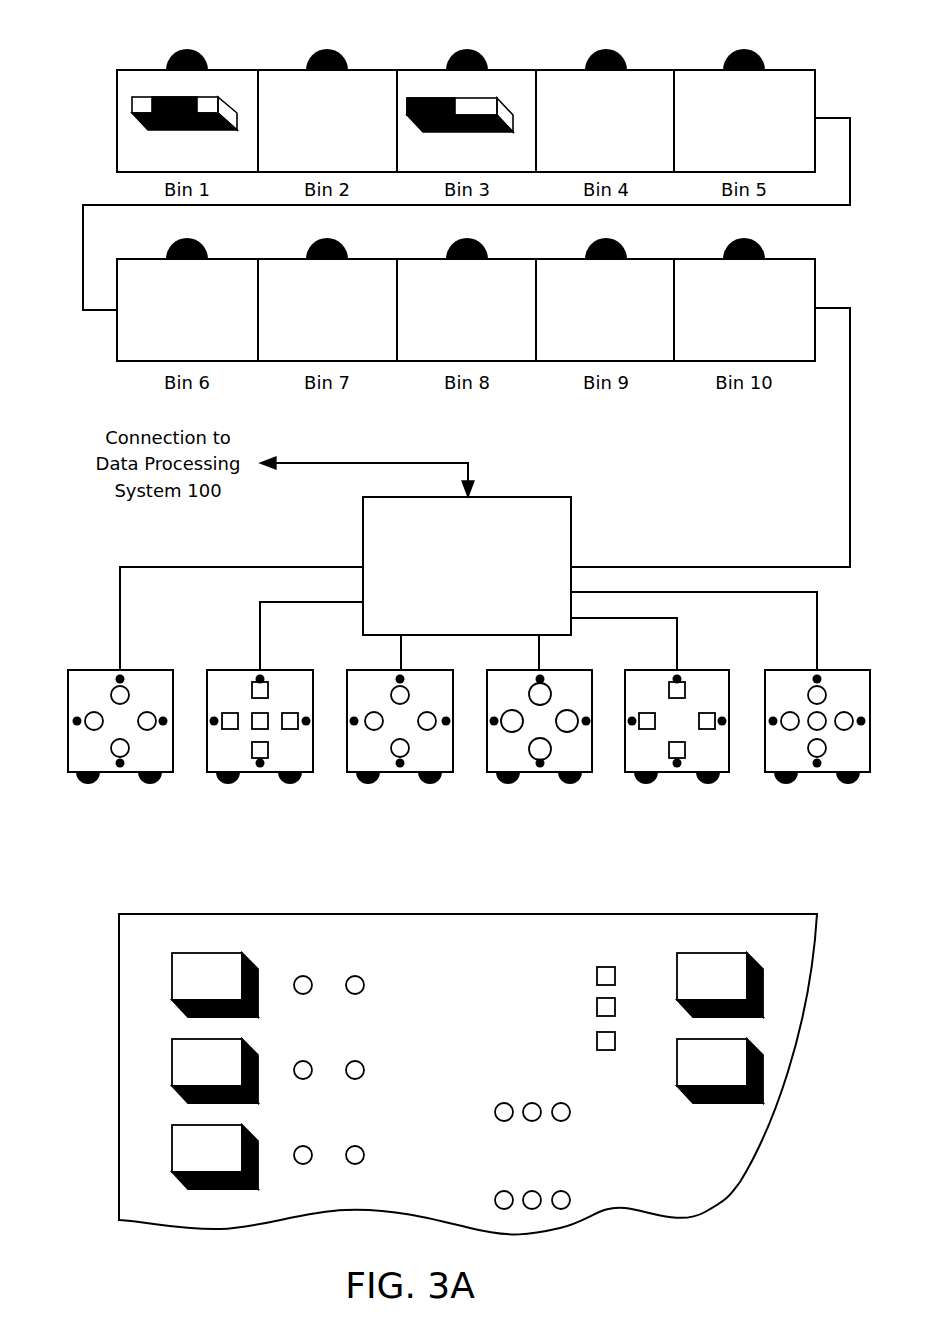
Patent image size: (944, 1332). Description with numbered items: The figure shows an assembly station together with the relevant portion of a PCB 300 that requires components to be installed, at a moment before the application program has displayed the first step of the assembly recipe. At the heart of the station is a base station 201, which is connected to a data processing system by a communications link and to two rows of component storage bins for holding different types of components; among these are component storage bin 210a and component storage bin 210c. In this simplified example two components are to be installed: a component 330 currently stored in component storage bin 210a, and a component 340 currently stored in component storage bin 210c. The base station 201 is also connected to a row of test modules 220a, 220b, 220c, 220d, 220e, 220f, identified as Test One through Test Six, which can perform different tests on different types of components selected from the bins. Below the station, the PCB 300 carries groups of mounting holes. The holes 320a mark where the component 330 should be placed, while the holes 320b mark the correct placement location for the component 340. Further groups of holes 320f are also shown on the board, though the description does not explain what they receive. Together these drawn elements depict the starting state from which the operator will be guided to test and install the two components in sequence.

The component storage bin 210a is at (115, 90).
The component storage bin 210c is at (430, 68).
The component 330 is at (217, 98).
The component 340 is at (497, 98).
The base station 201 is at (549, 496).
The test module 220a is at (68, 681).
The test module 220b is at (207, 681).
The test module 220c is at (347, 681).
The test module 220d is at (592, 683).
The test module 220e is at (697, 668).
The test module 220f is at (832, 668).
The PCB 300 is at (742, 1180).
The holes 320a is at (305, 976).
The holes 320b is at (597, 1041).
The triple circular component pads 320f is at (561, 1103).